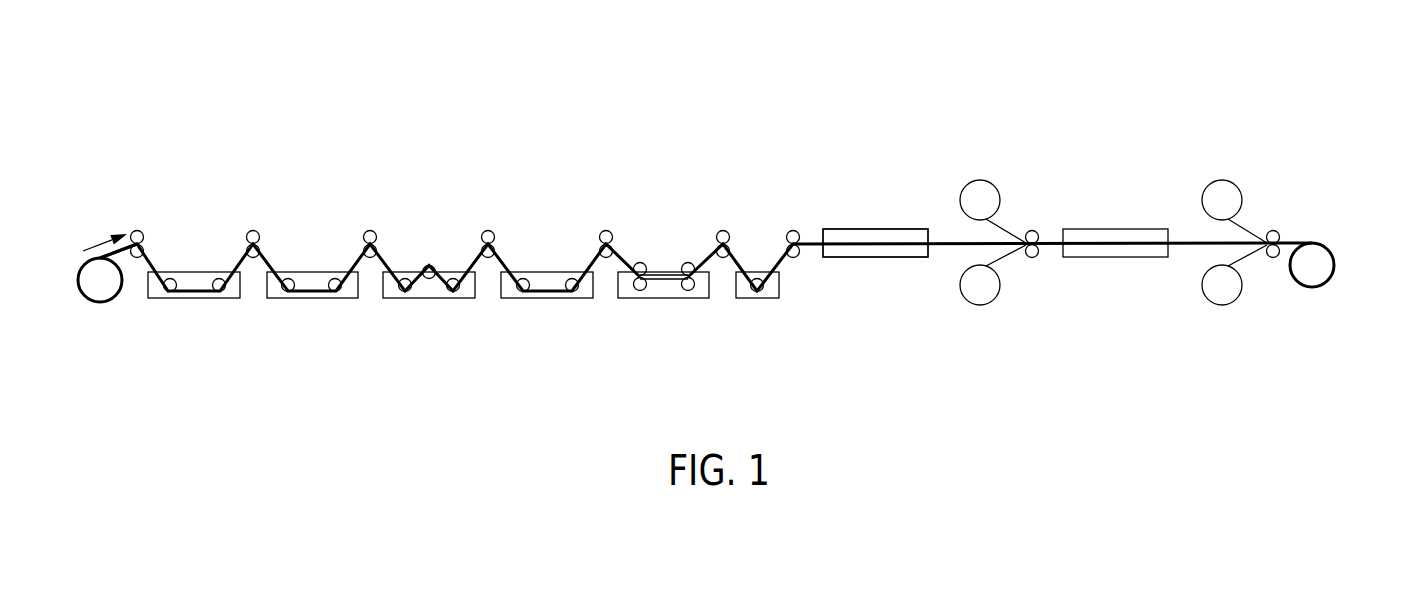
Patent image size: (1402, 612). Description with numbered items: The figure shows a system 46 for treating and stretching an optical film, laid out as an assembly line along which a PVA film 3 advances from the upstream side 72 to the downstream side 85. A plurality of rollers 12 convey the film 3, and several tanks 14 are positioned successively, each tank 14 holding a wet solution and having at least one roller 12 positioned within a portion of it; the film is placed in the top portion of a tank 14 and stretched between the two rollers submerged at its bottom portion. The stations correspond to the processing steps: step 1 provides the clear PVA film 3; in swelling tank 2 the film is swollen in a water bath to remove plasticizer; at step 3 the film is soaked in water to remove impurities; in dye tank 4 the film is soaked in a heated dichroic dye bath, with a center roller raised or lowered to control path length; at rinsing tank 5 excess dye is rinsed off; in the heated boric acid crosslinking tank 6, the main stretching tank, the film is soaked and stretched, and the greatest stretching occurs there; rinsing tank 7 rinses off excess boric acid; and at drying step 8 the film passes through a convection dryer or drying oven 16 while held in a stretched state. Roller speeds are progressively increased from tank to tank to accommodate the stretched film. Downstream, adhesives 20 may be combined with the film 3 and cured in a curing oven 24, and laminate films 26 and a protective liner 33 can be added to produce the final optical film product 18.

The film providing step 1 is at (79, 330).
The swelling tank 2 is at (193, 232).
The optical film 3 is at (108, 246).
The dye tank 4 is at (424, 233).
The rinsing tank 5 is at (539, 233).
The boric acid crosslinking tank 6 is at (658, 233).
The rinsing tank 7 is at (753, 233).
The drying step 8 is at (877, 200).
The rollers 12 is at (250, 231).
The tanks 14 is at (226, 298).
The convection dryer or drying oven 16 is at (868, 252).
The final optical film product 18 is at (1316, 272).
The adhesives 20 is at (977, 187).
The curing oven 24 is at (1117, 235).
The laminate films 26 is at (978, 302).
The protective liner 33 is at (1220, 187).
The system 46 is at (825, 93).
The upstream side 72 is at (28, 299).
The downstream side 85 is at (1377, 299).